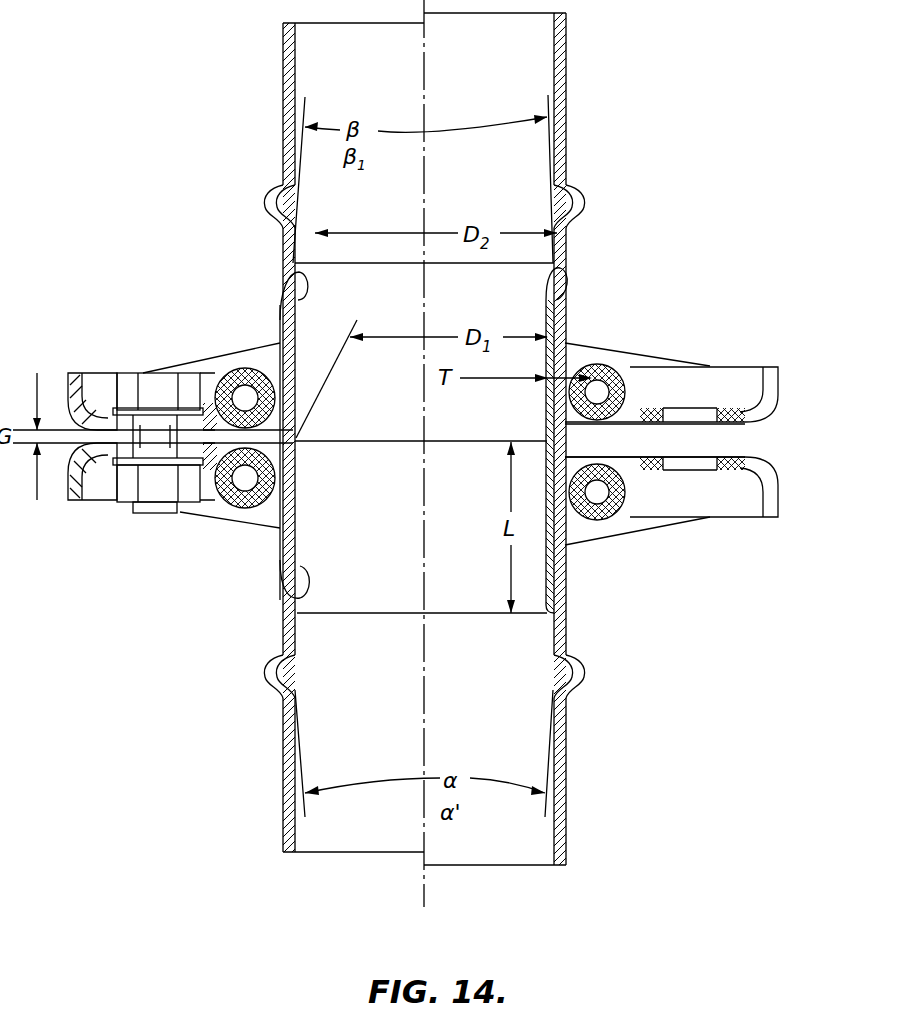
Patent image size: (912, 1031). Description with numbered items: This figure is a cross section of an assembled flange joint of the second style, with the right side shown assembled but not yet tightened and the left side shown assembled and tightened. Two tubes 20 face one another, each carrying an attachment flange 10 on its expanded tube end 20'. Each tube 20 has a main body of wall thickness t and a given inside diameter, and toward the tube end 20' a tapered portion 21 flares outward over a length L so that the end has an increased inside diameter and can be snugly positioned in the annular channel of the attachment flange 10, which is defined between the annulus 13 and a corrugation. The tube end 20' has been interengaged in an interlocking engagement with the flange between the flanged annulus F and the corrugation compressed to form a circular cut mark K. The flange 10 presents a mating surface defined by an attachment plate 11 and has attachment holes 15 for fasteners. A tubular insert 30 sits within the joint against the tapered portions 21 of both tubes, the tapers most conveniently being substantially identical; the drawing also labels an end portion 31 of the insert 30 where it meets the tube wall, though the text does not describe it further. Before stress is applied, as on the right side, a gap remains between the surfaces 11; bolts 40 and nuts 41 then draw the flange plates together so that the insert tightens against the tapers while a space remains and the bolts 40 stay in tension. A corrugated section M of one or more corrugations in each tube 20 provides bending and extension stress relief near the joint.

The attachment flange 10 is at (517, 448).
The attachment plate 11 is at (745, 457).
The annulus 13 is at (624, 396).
The attachment holes 15 is at (690, 415).
The tube 20 is at (464, 439).
The tube end 20' is at (266, 454).
The tapered portion 21 is at (288, 300).
The tubular insert 30 is at (597, 417).
The rolled lip of sleeve 31 is at (570, 272).
The bolts 40 is at (153, 438).
The nuts 41 is at (125, 487).
The corrugated section M is at (582, 206).
The circular cut mark K is at (229, 368).
The flanged annulus F is at (614, 384).